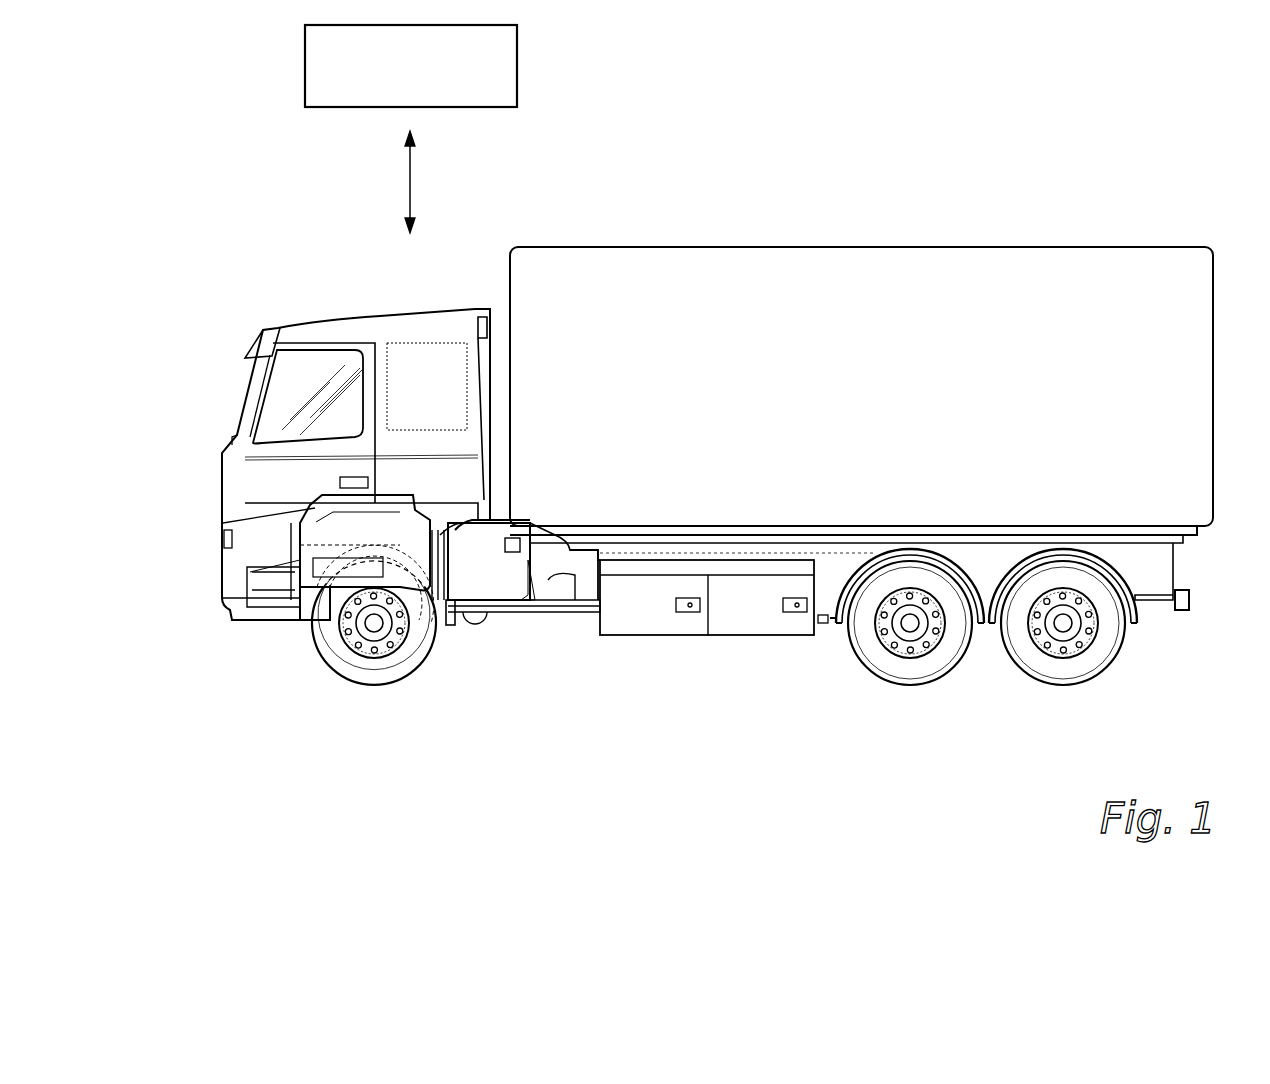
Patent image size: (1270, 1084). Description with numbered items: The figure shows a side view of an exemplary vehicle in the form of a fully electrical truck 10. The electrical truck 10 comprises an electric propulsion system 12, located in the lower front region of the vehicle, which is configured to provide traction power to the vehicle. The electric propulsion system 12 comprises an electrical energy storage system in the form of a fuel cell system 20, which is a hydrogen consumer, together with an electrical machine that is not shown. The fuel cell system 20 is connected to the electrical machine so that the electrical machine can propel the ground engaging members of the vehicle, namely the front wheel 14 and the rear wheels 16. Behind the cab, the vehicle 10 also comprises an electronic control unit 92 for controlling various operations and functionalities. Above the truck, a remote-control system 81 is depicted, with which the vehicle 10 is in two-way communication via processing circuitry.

The electrical truck 10 is at (297, 193).
The remote-control system 81 is at (411, 66).
The electric propulsion system 12 is at (300, 587).
The fuel cell system 20 is at (317, 628).
The wheel 14 is at (405, 650).
The wheel 16 is at (945, 645).
The electronic control unit 92 is at (524, 540).